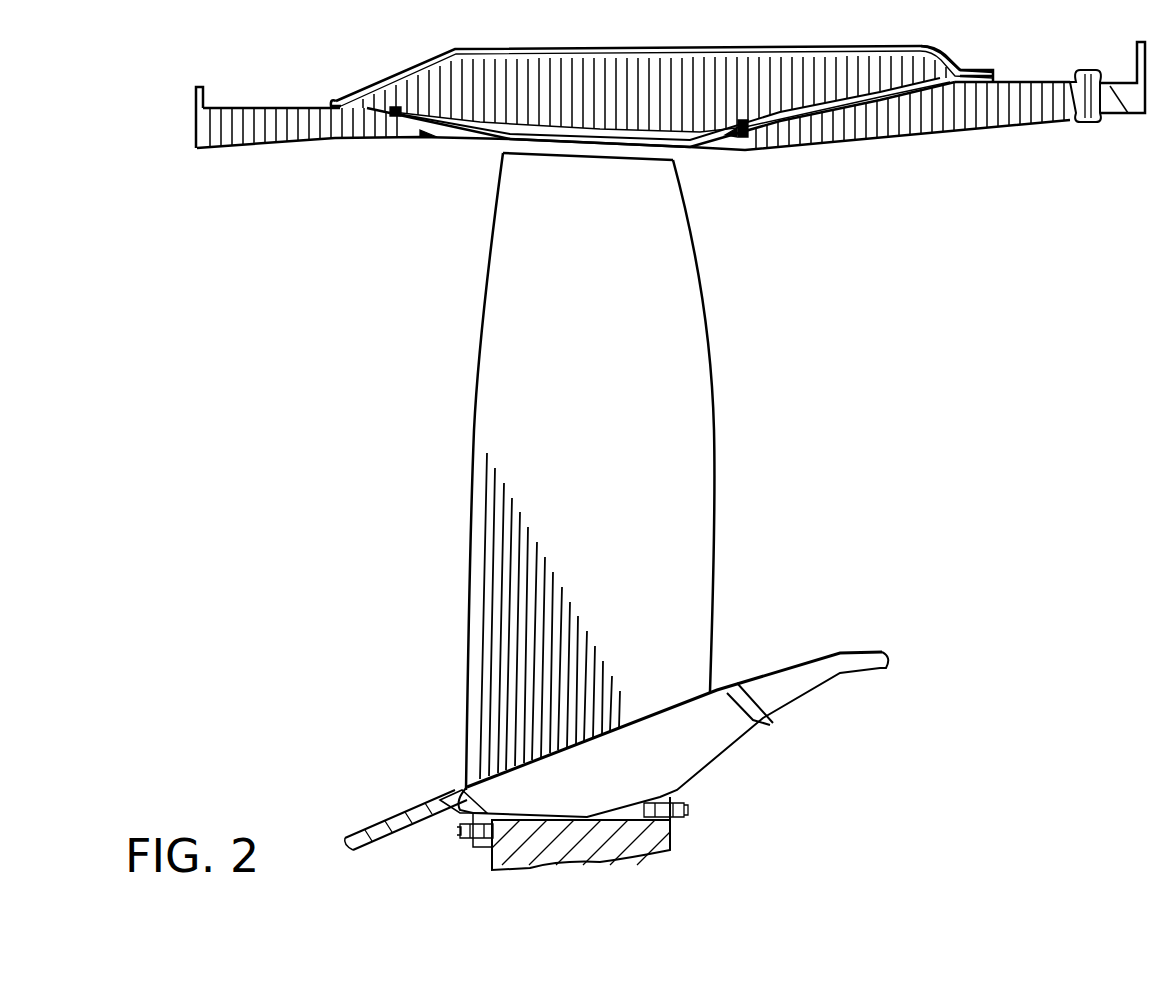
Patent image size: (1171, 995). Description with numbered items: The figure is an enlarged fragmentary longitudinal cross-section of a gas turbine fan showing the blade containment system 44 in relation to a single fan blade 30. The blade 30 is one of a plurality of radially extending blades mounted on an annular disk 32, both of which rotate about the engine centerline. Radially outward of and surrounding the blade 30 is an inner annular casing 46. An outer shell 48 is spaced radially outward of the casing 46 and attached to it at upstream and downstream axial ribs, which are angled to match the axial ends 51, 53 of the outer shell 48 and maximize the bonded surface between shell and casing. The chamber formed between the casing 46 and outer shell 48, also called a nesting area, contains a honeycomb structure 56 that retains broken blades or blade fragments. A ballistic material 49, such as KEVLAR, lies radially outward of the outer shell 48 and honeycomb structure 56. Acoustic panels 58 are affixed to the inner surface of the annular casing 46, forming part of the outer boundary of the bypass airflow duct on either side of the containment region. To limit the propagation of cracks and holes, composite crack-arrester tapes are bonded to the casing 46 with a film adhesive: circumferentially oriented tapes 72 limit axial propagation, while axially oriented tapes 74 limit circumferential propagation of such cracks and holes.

The fan blade 30 is at (605, 408).
The annular disk 32 is at (428, 805).
The blade containment system 44 is at (782, 45).
The inner annular casing 46 is at (742, 137).
The outer shell 48 is at (418, 68).
The ballistic material 49 is at (458, 52).
The upstream axial end of outer shell 51 is at (333, 102).
The downstream axial end of outer shell 53 is at (993, 70).
The honeycomb structure 56 is at (915, 70).
The acoustic panels 58 is at (297, 133).
The circumferentially oriented composite tapes 72 is at (394, 112).
The axially oriented composite tapes 74 is at (693, 135).